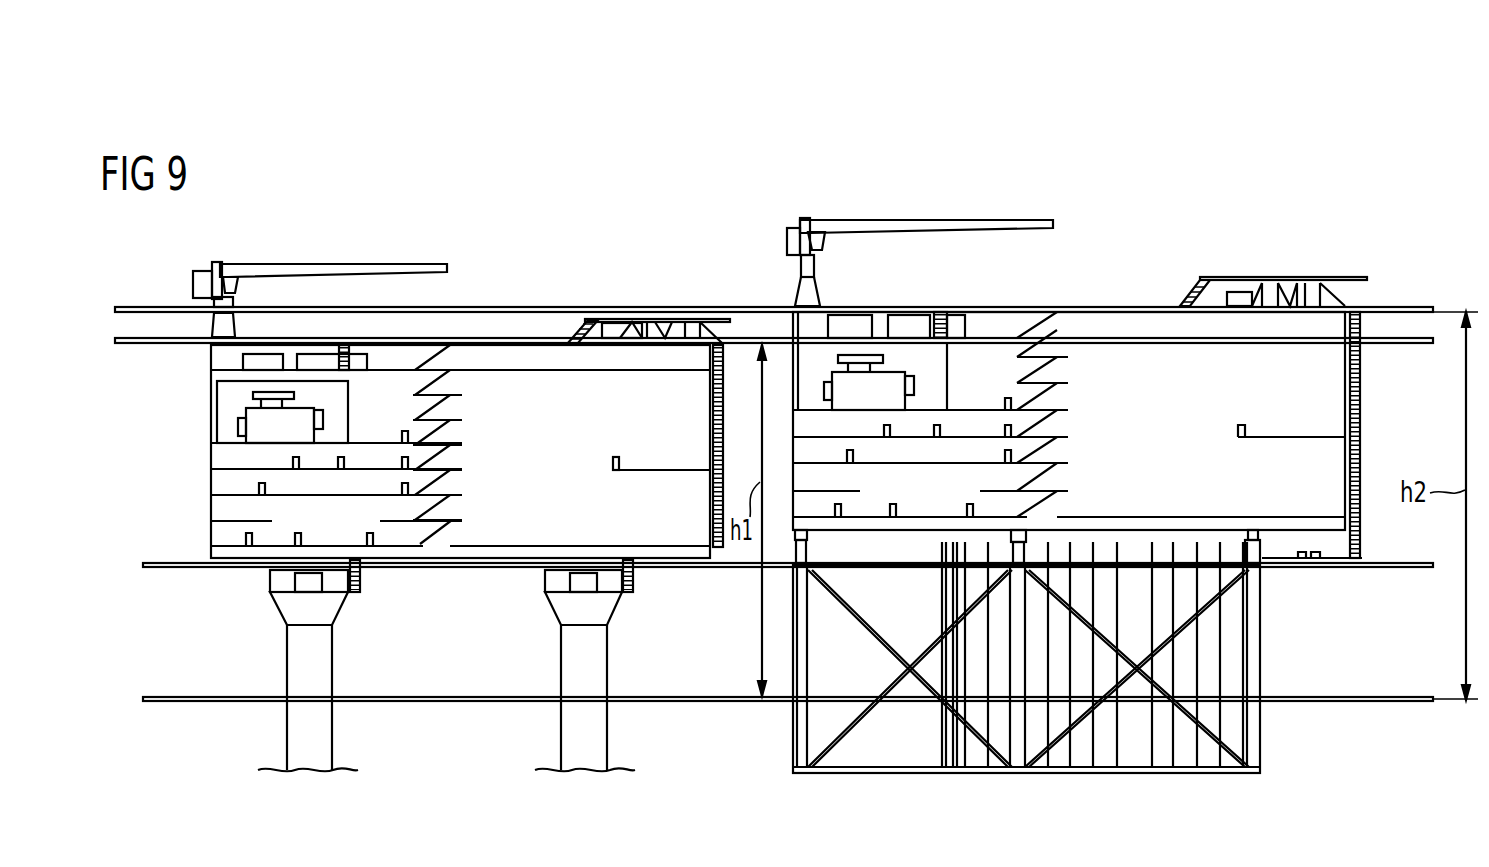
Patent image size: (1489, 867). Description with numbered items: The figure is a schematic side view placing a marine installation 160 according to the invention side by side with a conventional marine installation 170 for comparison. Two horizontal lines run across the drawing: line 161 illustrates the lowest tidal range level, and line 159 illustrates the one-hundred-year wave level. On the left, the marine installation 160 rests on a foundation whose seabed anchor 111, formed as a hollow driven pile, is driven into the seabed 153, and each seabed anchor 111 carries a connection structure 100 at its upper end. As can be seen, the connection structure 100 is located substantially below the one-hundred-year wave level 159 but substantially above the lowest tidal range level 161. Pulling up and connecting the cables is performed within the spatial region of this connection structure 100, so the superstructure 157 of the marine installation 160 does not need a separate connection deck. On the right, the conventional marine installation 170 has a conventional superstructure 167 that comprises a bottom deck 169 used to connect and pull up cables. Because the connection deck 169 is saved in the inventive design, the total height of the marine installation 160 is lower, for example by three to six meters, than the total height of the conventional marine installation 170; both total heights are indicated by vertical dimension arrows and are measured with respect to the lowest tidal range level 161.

The connection structure 100 is at (382, 586).
The seabed anchor 111 is at (358, 672).
The seabed 153 is at (350, 770).
The first topside module 157 is at (185, 418).
The 100-year wave level 159 is at (186, 568).
The marine installation 160 is at (668, 258).
The lowest tidal range level 161 is at (186, 701).
The conventional superstructure 167 is at (1376, 415).
The bottom deck 169 is at (1375, 553).
The conventional marine installation 170 is at (1367, 220).